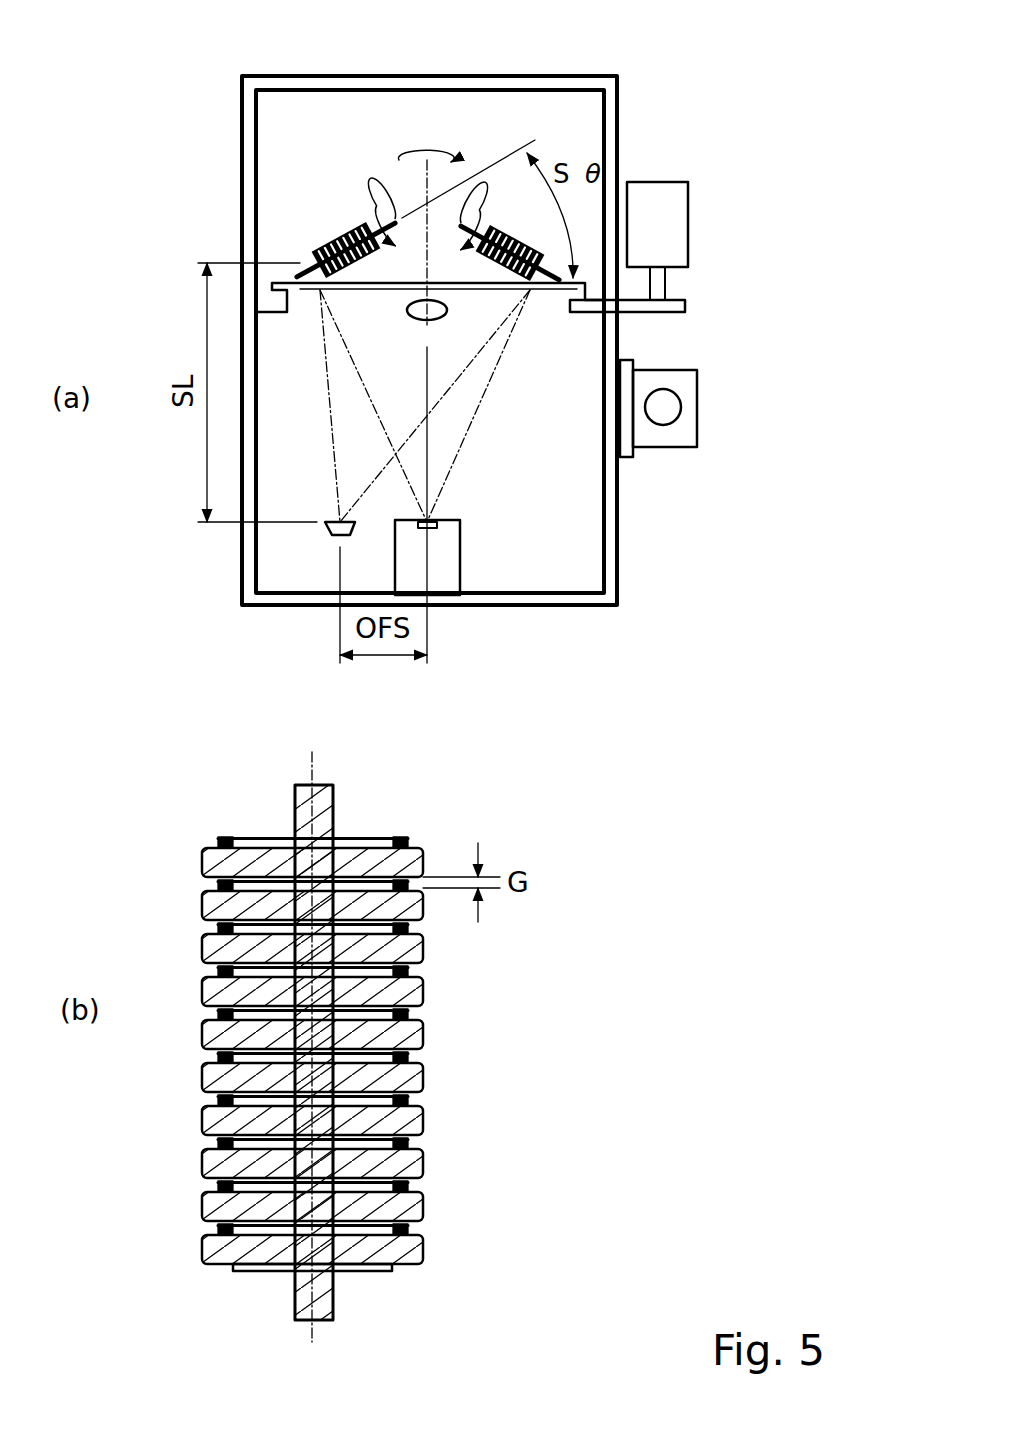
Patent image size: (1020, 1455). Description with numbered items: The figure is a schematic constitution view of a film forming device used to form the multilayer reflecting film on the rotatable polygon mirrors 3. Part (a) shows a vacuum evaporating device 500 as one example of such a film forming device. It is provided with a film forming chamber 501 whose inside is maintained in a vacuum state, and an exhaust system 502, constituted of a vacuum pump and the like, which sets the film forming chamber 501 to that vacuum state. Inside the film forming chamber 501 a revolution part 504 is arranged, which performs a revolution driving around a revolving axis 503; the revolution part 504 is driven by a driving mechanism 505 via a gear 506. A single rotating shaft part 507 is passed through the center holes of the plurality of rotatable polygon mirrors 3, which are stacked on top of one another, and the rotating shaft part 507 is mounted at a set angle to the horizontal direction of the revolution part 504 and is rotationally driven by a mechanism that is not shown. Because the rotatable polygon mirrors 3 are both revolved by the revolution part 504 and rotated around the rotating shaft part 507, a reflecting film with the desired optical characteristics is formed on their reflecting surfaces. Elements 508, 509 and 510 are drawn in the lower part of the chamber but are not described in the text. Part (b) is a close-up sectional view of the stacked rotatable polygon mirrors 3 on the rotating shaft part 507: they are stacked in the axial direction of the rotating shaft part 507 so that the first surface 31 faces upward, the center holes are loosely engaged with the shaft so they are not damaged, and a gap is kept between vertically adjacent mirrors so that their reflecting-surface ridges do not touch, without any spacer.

The vacuum evaporating device 500 is at (222, 62).
The film forming chamber 501 is at (352, 82).
The exhaust system 502 is at (670, 430).
The revolving axis 503 is at (427, 190).
The revolution part 504 is at (272, 287).
The driving mechanism 505 is at (660, 202).
The gear 506 is at (632, 308).
The rotating shaft part 507 is at (377, 223).
The light source 508 is at (333, 533).
The camera 509 is at (452, 562).
The opening 510 is at (443, 318).
The rotatable polygon mirror 3 is at (270, 830).
The first surface 31 is at (417, 840).